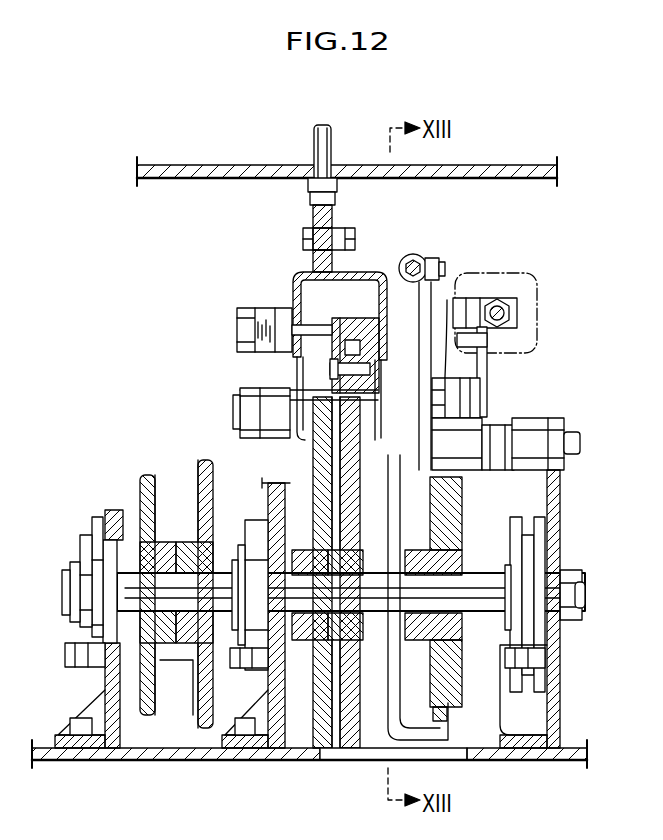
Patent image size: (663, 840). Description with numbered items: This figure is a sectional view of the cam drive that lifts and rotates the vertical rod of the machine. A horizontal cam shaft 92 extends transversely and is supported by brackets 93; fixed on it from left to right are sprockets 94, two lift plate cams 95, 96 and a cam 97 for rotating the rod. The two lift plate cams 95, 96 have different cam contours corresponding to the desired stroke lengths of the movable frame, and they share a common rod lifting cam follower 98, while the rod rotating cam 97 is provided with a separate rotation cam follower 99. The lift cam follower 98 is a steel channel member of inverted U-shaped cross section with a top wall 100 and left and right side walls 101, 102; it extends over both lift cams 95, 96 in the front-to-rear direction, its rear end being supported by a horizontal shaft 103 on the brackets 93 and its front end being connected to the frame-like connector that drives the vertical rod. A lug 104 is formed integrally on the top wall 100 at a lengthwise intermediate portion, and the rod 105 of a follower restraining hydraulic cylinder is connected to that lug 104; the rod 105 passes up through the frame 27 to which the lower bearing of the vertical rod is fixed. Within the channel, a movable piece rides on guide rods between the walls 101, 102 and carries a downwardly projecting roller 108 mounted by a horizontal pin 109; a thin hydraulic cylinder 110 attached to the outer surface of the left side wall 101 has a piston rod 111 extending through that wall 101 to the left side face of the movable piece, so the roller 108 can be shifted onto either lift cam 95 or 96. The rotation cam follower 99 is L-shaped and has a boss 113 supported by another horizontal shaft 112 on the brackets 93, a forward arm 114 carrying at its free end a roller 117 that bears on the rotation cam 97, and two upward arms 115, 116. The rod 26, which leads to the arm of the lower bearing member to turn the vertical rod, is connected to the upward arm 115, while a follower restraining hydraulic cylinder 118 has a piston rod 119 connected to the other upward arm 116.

The rod 26 is at (425, 262).
The frame 27 is at (485, 170).
The cam shaft 92 is at (575, 612).
The brackets 93 is at (562, 712).
The sprockets 94 is at (202, 730).
The lift plate cam 95 is at (322, 750).
The lift plate cam 96 is at (348, 750).
The cam for rotating the rod 97 is at (440, 710).
The rod lifting cam follower 98 is at (222, 268).
The rotation cam follower 99 is at (540, 278).
The top wall 100 is at (305, 270).
The left side wall 101 is at (298, 290).
The right side wall 102 is at (418, 290).
The horizontal shaft 103 is at (236, 410).
The lug 104 is at (340, 228).
The rod 105 is at (318, 148).
The roller 108 is at (255, 391).
The horizontal pin 109 is at (330, 368).
The thin hydraulic cylinder 110 is at (237, 330).
The piston rod 111 is at (318, 320).
The horizontal shaft 112 is at (570, 456).
The boss 113 is at (445, 462).
The forward arm 114 is at (465, 455).
The upward arm 115 is at (432, 322).
The upward arm 116 is at (477, 370).
The roller 117 is at (488, 397).
The follower restraining hydraulic cylinder 118 is at (530, 275).
The piston rod 119 is at (510, 313).